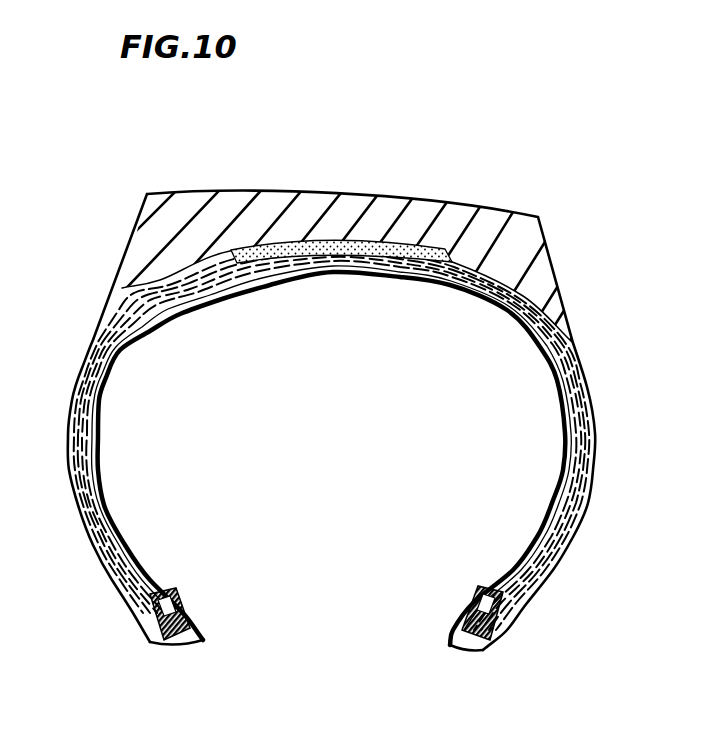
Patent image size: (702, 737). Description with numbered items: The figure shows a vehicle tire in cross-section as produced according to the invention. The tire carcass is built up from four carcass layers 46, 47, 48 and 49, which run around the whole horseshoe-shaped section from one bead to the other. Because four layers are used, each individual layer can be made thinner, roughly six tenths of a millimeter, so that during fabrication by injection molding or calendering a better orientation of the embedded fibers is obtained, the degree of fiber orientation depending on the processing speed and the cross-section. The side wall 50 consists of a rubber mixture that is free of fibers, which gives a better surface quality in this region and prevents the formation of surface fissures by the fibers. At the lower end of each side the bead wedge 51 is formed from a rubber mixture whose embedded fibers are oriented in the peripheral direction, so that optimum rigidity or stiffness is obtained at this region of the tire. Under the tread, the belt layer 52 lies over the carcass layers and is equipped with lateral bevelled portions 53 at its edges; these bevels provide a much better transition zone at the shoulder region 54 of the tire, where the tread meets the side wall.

The carcass layer 46 is at (128, 338).
The carcass layer 47 is at (110, 367).
The carcass layer 48 is at (95, 405).
The carcass layer 49 is at (77, 433).
The side wall 50 is at (97, 343).
The bead wedge 51 is at (158, 591).
The belt layer 52 is at (322, 243).
The lateral bevelled portions 53 is at (222, 256).
The shoulder region 54 is at (133, 208).